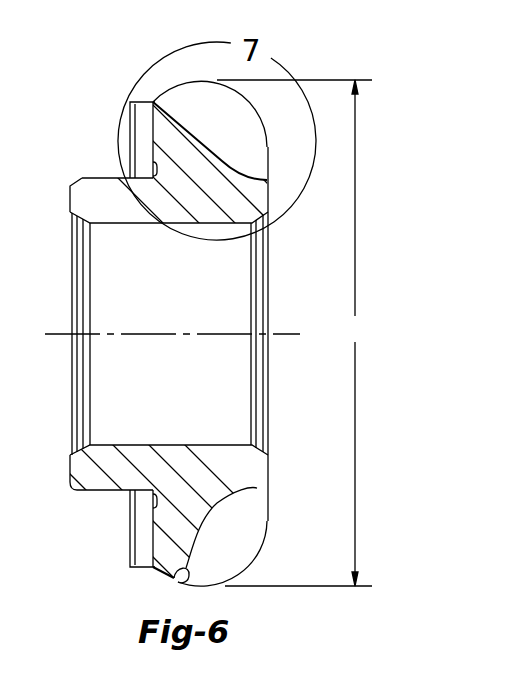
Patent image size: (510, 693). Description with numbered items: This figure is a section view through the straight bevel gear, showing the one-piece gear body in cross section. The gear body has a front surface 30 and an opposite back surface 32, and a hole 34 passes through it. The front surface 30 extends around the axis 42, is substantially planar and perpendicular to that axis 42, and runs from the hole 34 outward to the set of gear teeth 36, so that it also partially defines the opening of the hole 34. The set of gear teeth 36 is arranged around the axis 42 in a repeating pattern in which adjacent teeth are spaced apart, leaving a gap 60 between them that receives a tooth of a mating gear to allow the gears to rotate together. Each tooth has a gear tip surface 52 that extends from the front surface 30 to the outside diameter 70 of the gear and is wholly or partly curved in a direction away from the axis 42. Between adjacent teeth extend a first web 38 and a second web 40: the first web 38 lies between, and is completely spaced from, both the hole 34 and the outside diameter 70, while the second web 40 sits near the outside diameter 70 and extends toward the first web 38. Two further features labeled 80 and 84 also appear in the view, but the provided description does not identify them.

In FIG. 6, the front surface 30 is at (268, 201).
In FIG. 7, the front surface 30 is at (206, 692).
In FIG. 6, the back surface 32 is at (69, 196).
In FIG. 6, the hole 34 is at (160, 306).
In FIG. 6, the set of gear teeth 36 is at (239, 91).
In FIG. 6, the first web 38 is at (247, 176).
In FIG. 6, the second web 40 is at (186, 117).
In FIG. 6, the axis 42 is at (58, 334).
In FIG. 6, the gap 60 is at (217, 541).
In FIG. 6, the outside diameter 70 is at (294, 333).
In FIG. 7, the element 80 is at (290, 692).
In FIG. 7, the element 84 is at (340, 682).
In FIG. 7, the gear tip surface 52 is at (379, 689).